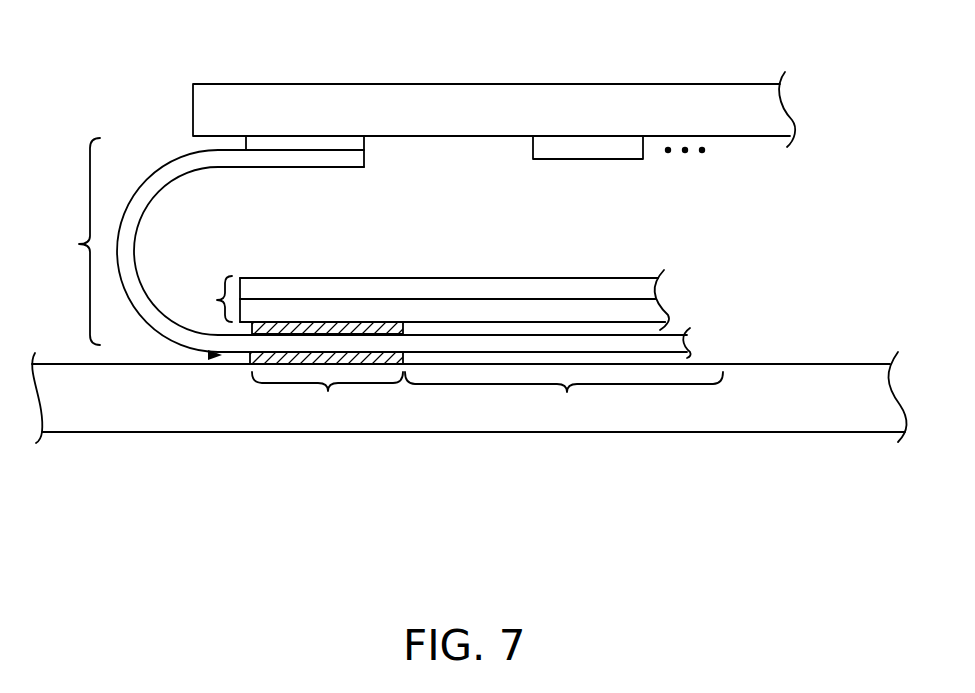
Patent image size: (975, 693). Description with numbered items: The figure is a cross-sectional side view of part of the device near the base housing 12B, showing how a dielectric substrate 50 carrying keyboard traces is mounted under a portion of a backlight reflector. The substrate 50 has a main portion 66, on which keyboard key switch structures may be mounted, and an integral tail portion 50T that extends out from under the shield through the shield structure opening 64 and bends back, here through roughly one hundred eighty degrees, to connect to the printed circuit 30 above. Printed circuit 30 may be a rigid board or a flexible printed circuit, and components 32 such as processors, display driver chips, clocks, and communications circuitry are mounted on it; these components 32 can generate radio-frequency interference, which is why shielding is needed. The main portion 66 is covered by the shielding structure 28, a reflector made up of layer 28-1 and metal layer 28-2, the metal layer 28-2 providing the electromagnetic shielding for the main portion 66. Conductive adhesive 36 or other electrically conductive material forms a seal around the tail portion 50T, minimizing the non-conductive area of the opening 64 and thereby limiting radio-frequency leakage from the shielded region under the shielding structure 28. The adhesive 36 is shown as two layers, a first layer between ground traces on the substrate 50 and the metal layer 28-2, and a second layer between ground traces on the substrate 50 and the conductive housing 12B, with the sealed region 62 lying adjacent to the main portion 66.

The printed circuit 30 is at (503, 93).
The components 32 is at (587, 152).
The substrate 50 is at (541, 342).
The tail portion 50T is at (67, 241).
The shielding structure (reflector) 28 is at (426, 300).
The layer of shielding structure 28-1 is at (485, 285).
The metal layer 28-2 is at (410, 308).
The conductive adhesive 36 is at (308, 325).
The adhesive-covered region 62 is at (327, 397).
The main portion 66 is at (564, 397).
The shield structure opening 64 is at (212, 356).
The base housing 12B is at (630, 423).